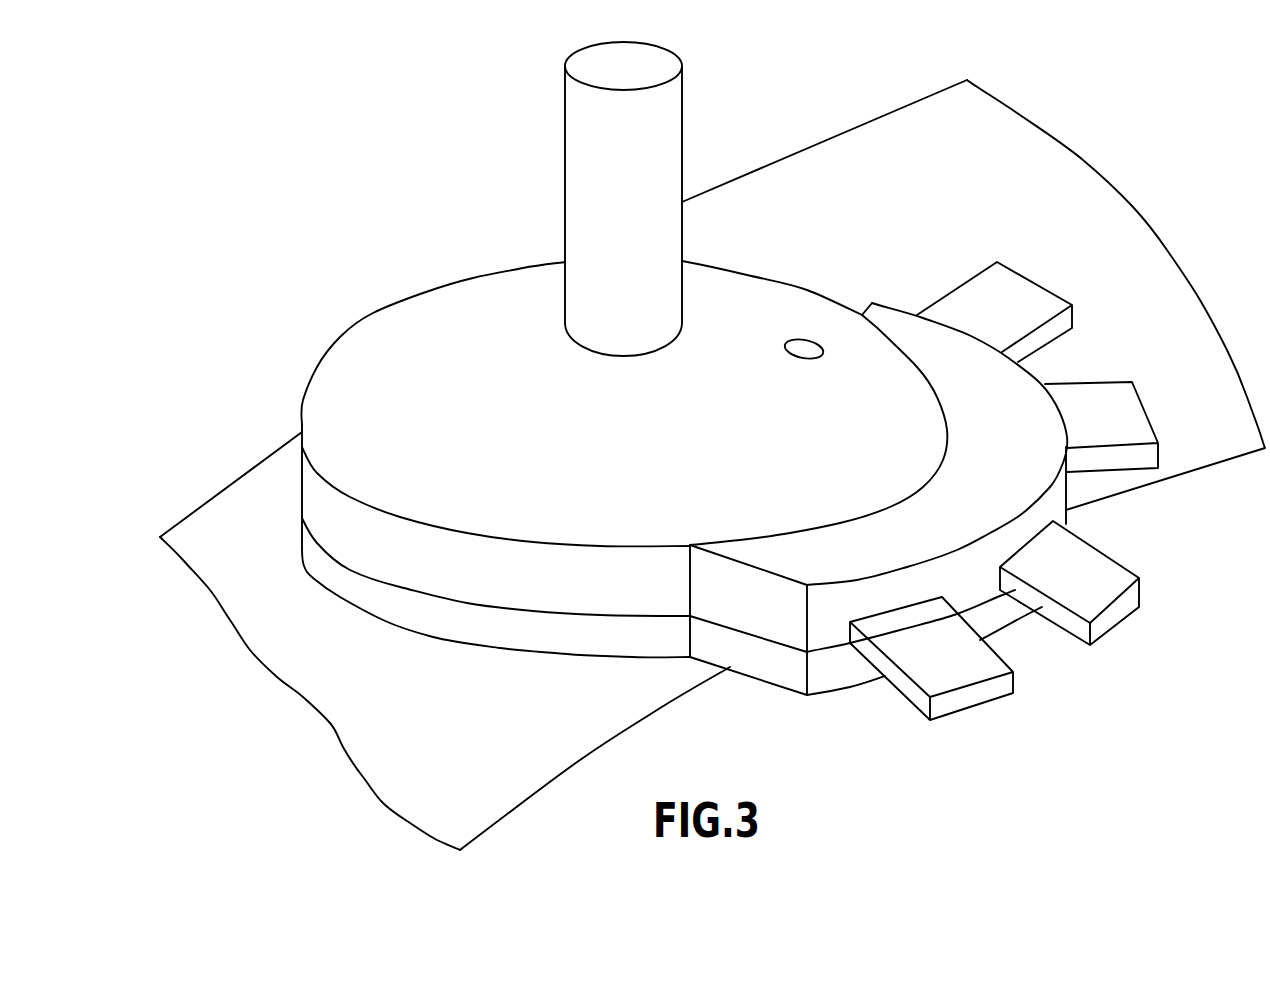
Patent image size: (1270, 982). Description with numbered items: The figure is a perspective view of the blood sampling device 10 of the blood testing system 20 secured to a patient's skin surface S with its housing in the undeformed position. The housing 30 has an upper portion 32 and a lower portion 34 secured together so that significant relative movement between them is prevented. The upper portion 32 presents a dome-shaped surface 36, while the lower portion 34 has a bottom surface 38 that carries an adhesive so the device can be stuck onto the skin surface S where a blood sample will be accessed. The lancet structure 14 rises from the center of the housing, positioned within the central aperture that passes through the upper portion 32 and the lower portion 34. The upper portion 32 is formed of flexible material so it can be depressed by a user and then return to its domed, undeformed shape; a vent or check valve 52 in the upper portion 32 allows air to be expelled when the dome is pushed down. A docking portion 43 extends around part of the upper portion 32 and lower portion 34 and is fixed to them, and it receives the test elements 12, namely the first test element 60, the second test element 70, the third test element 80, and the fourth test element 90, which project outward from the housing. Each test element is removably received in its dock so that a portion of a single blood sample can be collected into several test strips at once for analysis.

The blood sampling device 10 is at (715, 409).
The test elements 12 is at (1031, 493).
The lancet structure 14 is at (565, 183).
The blood testing system 20 is at (712, 437).
The housing 30 is at (300, 518).
The upper portion 32 is at (301, 412).
The lower portion 34 is at (317, 582).
The dome-shaped surface 36 is at (479, 426).
The bottom surface 38 is at (482, 645).
The docking portion 43 is at (1004, 449).
The vent or check valve 52 is at (798, 340).
The first test element 60 is at (972, 281).
The second test element 70 is at (1107, 382).
The third test element 80 is at (1105, 557).
The fourth test element 90 is at (910, 697).
The skin surface S is at (1048, 167).